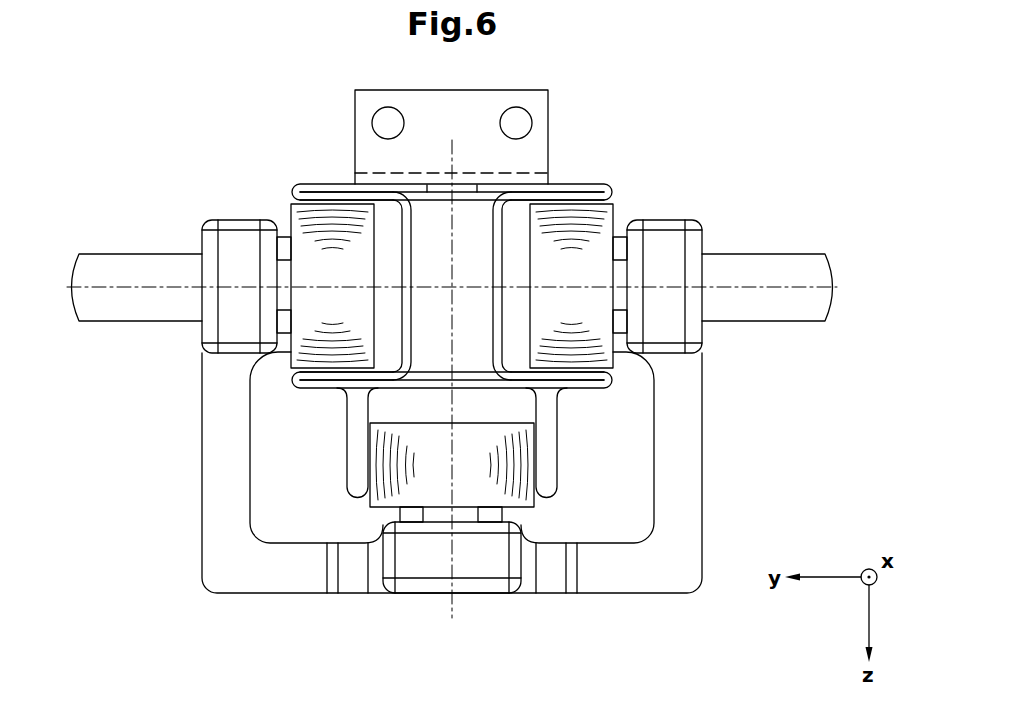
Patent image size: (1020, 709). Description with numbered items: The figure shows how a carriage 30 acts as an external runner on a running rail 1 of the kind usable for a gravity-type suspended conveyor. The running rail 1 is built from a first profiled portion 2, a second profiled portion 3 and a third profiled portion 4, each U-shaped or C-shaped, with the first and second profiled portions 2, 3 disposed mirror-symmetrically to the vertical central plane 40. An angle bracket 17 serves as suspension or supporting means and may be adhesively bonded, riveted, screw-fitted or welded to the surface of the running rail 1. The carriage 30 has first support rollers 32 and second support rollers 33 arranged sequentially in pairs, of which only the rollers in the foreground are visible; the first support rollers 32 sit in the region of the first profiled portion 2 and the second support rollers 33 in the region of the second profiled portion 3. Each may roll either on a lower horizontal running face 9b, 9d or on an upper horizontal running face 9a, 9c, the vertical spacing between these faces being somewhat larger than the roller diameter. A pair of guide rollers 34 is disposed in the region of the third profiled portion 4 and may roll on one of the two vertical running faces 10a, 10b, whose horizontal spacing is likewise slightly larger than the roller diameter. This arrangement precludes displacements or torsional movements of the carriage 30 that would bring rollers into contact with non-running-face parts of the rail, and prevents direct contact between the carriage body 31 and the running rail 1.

The running rail 1 is at (236, 99).
The first profiled portion 2 is at (522, 214).
The second profiled portion 3 is at (382, 214).
The third profiled portion 4 is at (521, 405).
The upper horizontal running face 9a is at (578, 200).
The lower horizontal running face 9b is at (568, 373).
The upper horizontal running face 9c is at (330, 198).
The lower horizontal running face 9d is at (328, 373).
The vertical running face 10a is at (536, 463).
The vertical running face 10b is at (368, 463).
The angle bracket 17 is at (373, 102).
The carriage 30 is at (154, 515).
The carriage body 31 is at (681, 471).
The first support rollers 32 is at (600, 225).
The second support rollers 33 is at (308, 232).
The guide rollers 34 is at (510, 493).
The vertical central plane 40 is at (452, 607).